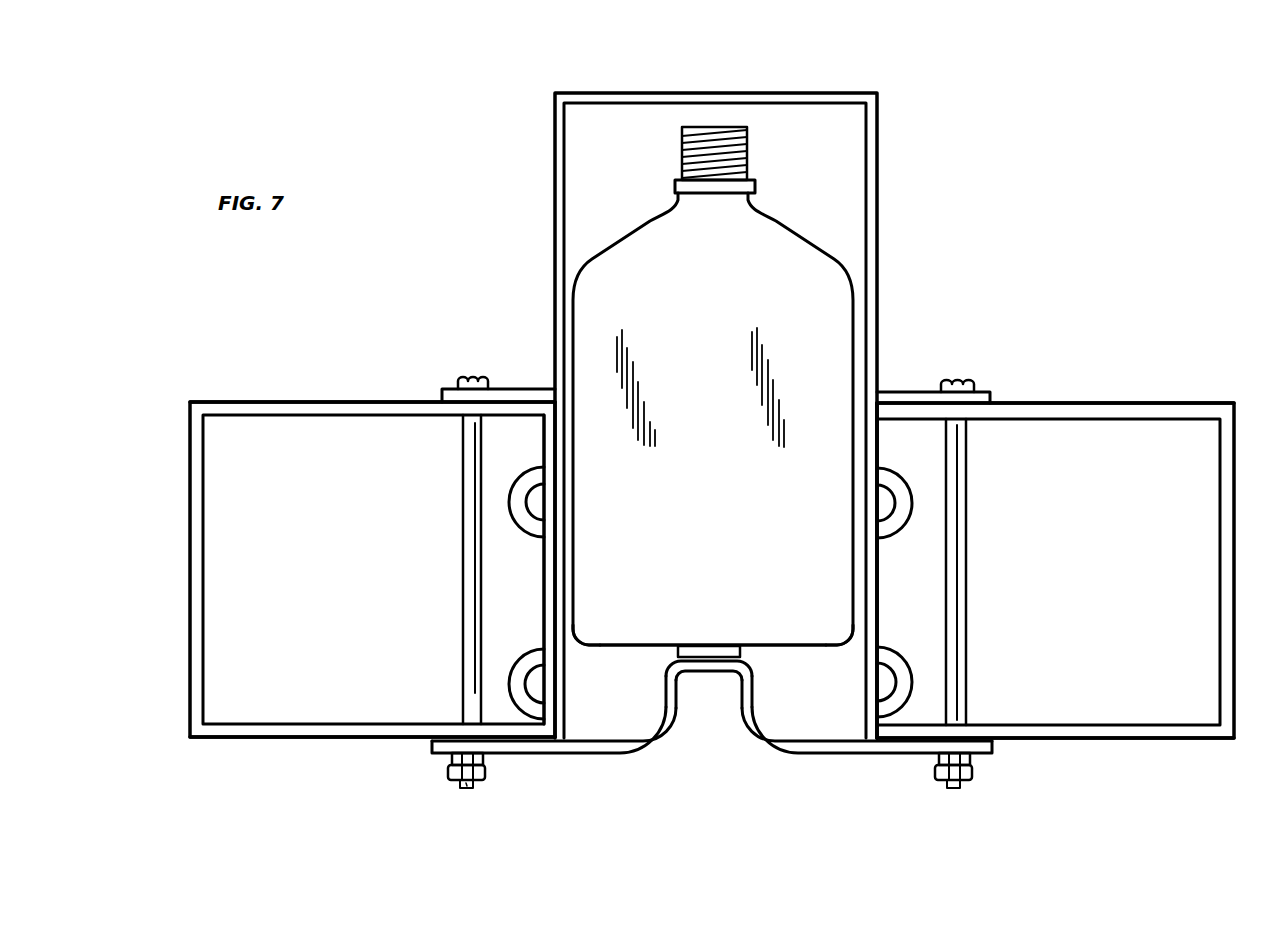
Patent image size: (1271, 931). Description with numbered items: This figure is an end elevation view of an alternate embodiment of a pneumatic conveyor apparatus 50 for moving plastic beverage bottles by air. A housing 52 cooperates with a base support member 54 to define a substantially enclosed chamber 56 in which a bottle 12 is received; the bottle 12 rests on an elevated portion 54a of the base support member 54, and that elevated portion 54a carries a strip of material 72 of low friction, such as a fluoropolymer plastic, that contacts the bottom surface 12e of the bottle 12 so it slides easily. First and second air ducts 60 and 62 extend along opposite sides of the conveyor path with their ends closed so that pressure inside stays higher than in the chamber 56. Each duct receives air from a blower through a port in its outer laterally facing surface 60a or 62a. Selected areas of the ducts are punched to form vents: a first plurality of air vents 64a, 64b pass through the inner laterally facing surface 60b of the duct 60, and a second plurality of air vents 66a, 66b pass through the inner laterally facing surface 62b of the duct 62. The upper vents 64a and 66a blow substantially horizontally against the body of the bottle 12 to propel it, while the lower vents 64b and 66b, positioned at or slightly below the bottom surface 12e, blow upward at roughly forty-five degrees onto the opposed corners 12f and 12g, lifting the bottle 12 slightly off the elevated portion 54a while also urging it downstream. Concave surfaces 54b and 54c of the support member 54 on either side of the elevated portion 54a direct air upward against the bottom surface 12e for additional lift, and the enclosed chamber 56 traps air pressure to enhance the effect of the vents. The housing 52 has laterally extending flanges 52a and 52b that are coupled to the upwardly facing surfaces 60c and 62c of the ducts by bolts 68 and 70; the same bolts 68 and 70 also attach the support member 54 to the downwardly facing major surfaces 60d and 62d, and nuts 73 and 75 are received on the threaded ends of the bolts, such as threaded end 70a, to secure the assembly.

The bottle 12 is at (812, 332).
The bottom surface 12e is at (655, 648).
The corner 12f is at (586, 651).
The corner 12g is at (821, 648).
The pneumatic conveyor apparatus 50 is at (452, 197).
The housing 52 is at (712, 91).
The laterally extending flange 52a is at (520, 389).
The laterally extending flange 52b is at (918, 392).
The base support member 54 is at (598, 753).
The elevated portion 54a is at (757, 661).
The concave surface 54b is at (648, 722).
The concave surface 54c is at (775, 720).
The chamber 56 is at (816, 132).
The first air duct 60 is at (190, 401).
The laterally facing surface 60a is at (205, 557).
The laterally facing surface 60b is at (543, 595).
The upwardly facing surface 60c is at (313, 402).
The downwardly facing major surface 60d is at (323, 738).
The second air duct 62 is at (1235, 402).
The laterally facing surface 62a is at (1220, 570).
The laterally facing surface 62b is at (879, 594).
The upwardly facing surface 62c is at (1106, 403).
The downwardly facing major surface 62d is at (1108, 740).
The upper air vent 64a is at (535, 500).
The lower air vent 64b is at (535, 673).
The upper air vent 66a is at (890, 505).
The lower air vent 66b is at (893, 670).
The bolt 68 is at (470, 377).
The bolt 70 is at (963, 380).
The threaded end 70a is at (955, 791).
The strip of material 72 is at (705, 646).
The nut 73 is at (448, 760).
The nut 75 is at (980, 760).